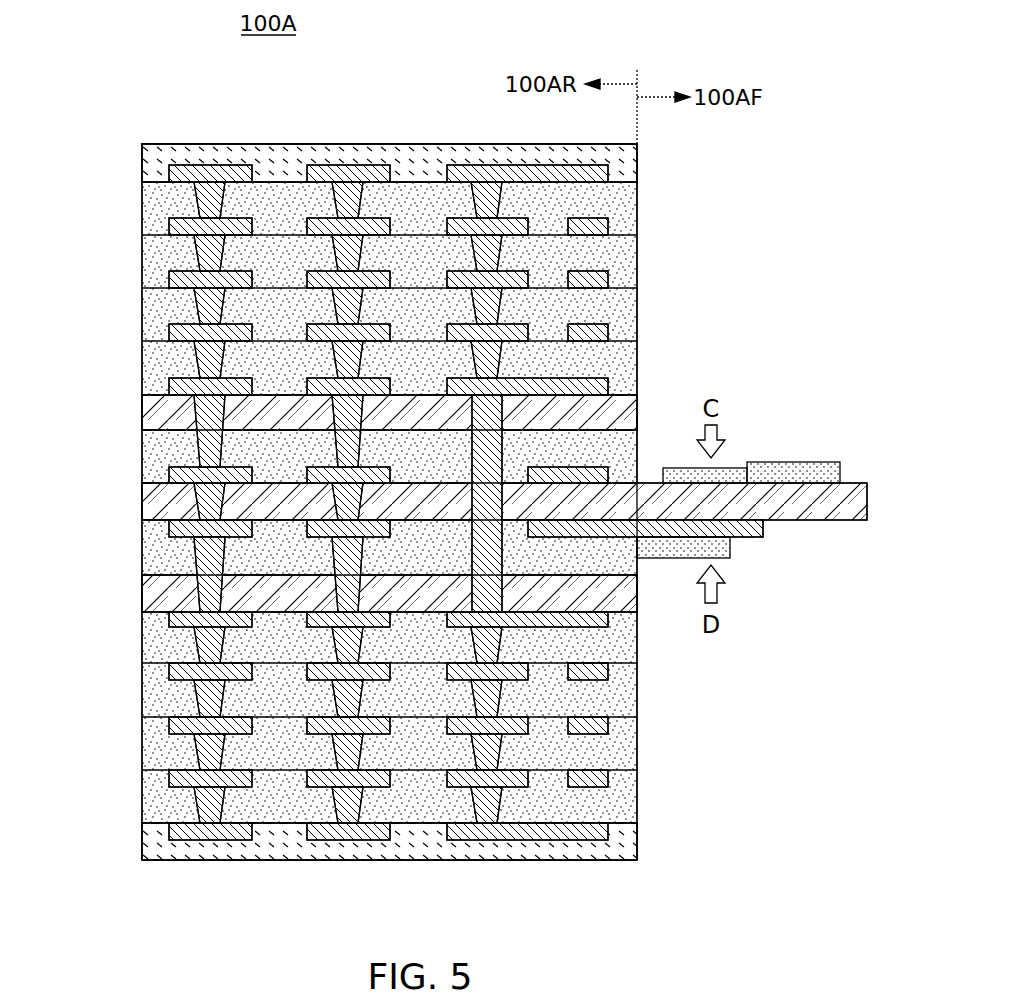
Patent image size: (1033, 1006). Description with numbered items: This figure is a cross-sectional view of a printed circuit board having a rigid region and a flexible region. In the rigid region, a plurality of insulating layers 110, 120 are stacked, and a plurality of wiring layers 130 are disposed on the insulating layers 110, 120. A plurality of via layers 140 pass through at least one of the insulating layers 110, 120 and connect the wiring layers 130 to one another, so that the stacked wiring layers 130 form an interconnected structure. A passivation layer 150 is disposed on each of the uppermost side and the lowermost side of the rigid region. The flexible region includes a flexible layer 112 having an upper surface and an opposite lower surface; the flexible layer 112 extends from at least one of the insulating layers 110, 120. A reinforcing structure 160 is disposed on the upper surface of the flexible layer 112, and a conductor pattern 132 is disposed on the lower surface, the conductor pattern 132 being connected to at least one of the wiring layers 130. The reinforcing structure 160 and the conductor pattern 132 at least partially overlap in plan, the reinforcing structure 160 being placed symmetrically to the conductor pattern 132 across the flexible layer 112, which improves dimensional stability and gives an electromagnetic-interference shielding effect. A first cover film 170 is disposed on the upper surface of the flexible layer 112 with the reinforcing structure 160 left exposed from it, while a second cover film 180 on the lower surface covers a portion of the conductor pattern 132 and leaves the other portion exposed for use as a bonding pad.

The insulating layer 110 is at (142, 412).
The flexible layer 112 is at (793, 490).
The insulating layer 120 is at (142, 206).
The wiring layer 130 is at (512, 504).
The conductor pattern 132 is at (764, 528).
The via layer 140 is at (476, 440).
The passivation layer 150 is at (142, 162).
The reinforcing structure 160 is at (730, 467).
The first cover film 170 is at (818, 462).
The second cover film 180 is at (730, 555).